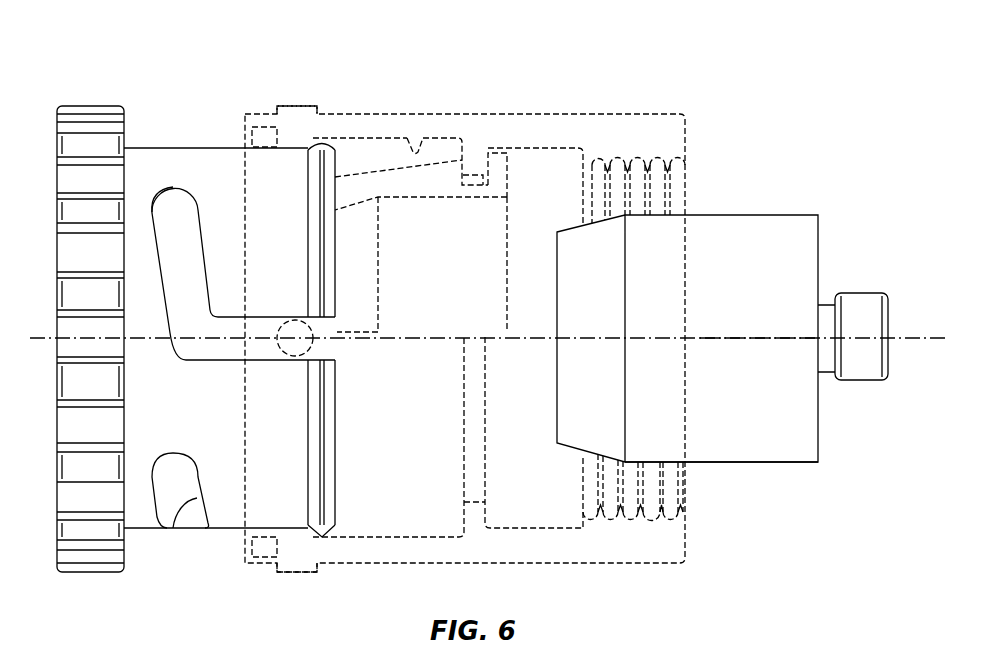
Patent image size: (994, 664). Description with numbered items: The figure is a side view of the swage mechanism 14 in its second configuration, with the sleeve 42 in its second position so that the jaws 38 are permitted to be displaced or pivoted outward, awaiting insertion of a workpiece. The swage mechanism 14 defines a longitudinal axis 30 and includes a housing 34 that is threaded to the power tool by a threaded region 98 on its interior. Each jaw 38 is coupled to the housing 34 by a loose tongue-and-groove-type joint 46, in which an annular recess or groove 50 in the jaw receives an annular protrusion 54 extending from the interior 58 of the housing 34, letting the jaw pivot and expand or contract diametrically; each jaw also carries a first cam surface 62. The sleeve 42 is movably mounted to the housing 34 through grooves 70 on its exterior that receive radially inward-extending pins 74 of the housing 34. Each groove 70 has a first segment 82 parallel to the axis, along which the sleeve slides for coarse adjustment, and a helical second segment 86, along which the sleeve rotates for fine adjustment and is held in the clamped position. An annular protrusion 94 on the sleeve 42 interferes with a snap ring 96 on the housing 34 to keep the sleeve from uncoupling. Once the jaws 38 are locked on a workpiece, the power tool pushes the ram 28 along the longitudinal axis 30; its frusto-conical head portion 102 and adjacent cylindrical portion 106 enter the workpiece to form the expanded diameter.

The swage mechanism 14 is at (739, 73).
The ram 28 is at (787, 216).
The longitudinal axis 30 is at (737, 340).
The housing 34 is at (607, 111).
The jaws 38 is at (366, 196).
The sleeve 42 is at (92, 108).
The tongue-and-groove-type joint 46 is at (514, 169).
The annular recess or groove 50 is at (493, 166).
The annular protrusion 54 is at (466, 182).
The interior of the housing 58 is at (424, 134).
The first cam surface 62 is at (385, 166).
The grooves 70 is at (198, 206).
The pins 74 is at (293, 105).
The first segment 82 is at (234, 318).
The second segment 86 is at (172, 186).
The annular protrusion 94 is at (332, 136).
The snap ring 96 is at (260, 553).
The threaded region 98 is at (655, 171).
The frusto-conical head portion 102 is at (563, 452).
The cylindrical portion 106 is at (735, 464).